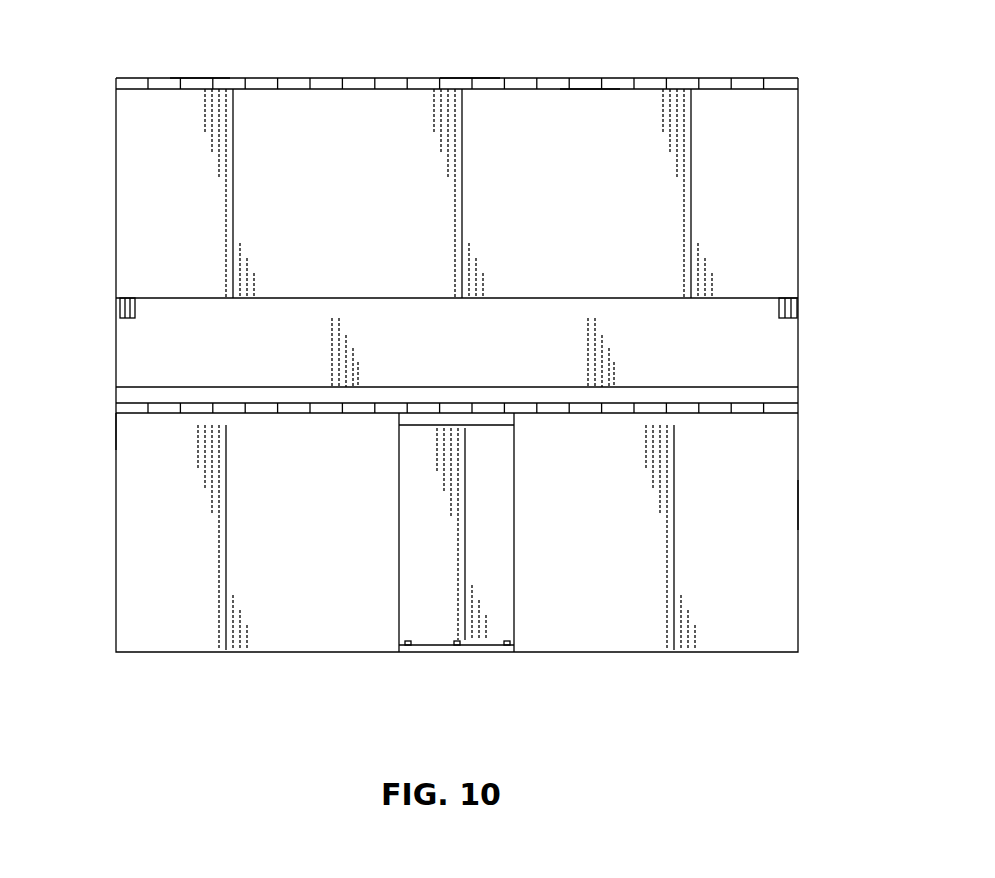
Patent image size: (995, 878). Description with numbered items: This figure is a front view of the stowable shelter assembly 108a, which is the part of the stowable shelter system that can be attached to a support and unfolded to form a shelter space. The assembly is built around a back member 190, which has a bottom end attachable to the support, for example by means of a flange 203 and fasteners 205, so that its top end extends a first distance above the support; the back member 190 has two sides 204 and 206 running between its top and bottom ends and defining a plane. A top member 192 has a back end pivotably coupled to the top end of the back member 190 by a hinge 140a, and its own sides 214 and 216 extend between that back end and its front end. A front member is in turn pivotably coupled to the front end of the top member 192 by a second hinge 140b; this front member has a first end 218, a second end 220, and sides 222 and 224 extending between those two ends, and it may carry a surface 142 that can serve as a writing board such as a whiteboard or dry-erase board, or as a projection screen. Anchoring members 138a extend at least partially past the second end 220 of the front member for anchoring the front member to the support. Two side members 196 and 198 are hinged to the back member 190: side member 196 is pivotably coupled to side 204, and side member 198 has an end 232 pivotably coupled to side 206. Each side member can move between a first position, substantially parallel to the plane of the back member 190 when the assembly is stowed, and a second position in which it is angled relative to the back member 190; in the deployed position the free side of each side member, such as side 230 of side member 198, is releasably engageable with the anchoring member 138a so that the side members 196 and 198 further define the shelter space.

The stowable shelter assembly 108a is at (195, 74).
The hinge 140b is at (458, 78).
The top member 192 is at (622, 78).
The first end 218 is at (594, 90).
The side 222 is at (800, 136).
The side 224 is at (117, 200).
The surface 142 is at (352, 225).
The second end 220 is at (299, 318).
The anchoring members 138a is at (140, 307).
The side 216 is at (117, 356).
The side 214 is at (800, 356).
The back member 190 is at (800, 368).
The side 204 is at (800, 396).
The hinge 140a is at (117, 405).
The side 206 is at (117, 418).
The side member 198 is at (117, 540).
The side member 196 is at (800, 539).
The end 232 is at (797, 504).
The side 230 is at (515, 530).
The fasteners 205 is at (513, 645).
The flange 203 is at (421, 653).